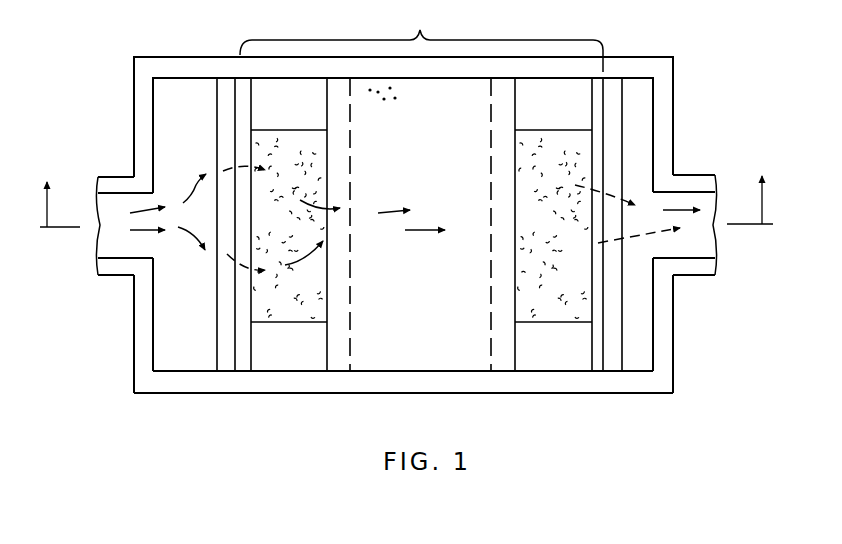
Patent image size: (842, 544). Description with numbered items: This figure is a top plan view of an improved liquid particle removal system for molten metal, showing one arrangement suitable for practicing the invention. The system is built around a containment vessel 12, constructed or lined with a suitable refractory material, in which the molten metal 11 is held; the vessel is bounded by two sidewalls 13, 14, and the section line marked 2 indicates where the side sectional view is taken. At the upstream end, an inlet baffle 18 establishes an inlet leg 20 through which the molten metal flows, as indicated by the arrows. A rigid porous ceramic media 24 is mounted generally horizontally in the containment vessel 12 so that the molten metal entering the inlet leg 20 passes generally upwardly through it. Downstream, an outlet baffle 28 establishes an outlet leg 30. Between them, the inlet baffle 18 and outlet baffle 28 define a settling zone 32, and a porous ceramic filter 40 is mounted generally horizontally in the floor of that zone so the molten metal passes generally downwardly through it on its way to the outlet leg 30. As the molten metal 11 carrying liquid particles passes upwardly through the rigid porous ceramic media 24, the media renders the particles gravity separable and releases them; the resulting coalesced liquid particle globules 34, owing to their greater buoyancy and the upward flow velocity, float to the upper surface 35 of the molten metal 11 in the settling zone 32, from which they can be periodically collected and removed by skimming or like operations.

The section line 2- 2 is at (406, 186).
The molten metal 11 is at (368, 362).
The containment vessel 12 is at (553, 37).
The sidewall 13 is at (182, 57).
The sidewall 14 is at (184, 393).
The inlet baffle 18 is at (231, 84).
The inlet leg 20 is at (105, 245).
The rigid porous ceramic media 24 is at (303, 138).
The outlet baffle 28 is at (613, 84).
The outlet leg 30 is at (708, 245).
The settling zone 32 is at (421, 36).
The coalesced liquid particle globules 34 is at (380, 97).
The upper surface of the molten metal 35 is at (447, 362).
The porous ceramic filter 40 is at (574, 138).